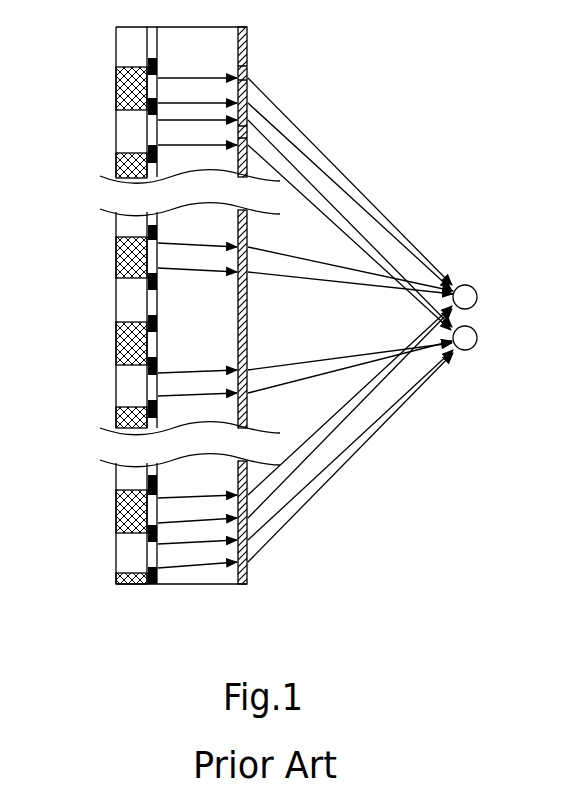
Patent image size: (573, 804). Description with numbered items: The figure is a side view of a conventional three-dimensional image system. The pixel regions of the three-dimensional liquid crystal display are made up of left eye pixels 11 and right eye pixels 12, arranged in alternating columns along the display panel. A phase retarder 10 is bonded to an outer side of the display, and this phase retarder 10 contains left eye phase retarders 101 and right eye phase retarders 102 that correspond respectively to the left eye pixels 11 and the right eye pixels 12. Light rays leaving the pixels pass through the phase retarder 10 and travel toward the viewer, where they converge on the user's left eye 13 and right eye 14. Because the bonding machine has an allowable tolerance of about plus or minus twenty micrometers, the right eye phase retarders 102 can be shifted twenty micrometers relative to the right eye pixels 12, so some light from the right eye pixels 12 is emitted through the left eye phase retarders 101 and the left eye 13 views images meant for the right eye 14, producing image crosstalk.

The phase retarder 10 is at (248, 572).
The left eye phase retarders 101 is at (248, 132).
The right eye phase retarders 102 is at (248, 73).
The left eye pixels 11 is at (116, 128).
The right eye pixels 12 is at (116, 85).
The left eye 13 is at (465, 350).
The right eye 14 is at (465, 285).